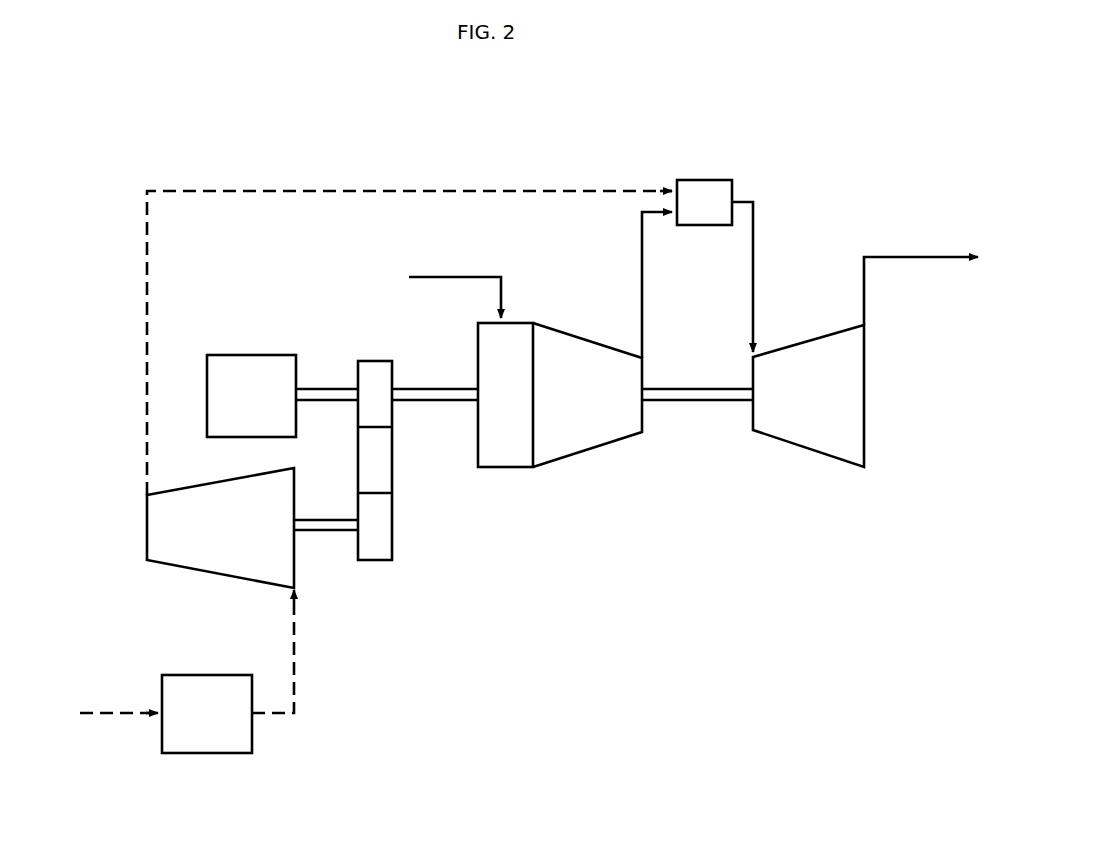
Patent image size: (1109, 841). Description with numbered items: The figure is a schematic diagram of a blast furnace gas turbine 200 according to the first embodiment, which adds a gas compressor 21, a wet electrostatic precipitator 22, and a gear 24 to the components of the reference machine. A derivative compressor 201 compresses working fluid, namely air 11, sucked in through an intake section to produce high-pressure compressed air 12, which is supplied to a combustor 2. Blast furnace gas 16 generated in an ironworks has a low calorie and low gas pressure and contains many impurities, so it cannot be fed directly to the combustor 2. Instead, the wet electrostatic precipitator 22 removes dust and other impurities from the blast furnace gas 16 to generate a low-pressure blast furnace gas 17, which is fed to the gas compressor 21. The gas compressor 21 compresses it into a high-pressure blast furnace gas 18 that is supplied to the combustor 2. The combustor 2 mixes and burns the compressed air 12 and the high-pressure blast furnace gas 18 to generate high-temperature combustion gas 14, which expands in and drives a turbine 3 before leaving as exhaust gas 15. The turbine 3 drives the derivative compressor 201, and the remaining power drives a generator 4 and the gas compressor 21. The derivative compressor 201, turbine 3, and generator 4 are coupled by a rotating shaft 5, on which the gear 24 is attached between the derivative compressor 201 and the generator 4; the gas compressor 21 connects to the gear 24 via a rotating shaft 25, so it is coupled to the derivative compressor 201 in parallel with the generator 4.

The blast furnace gas turbine 200 is at (302, 146).
The high-pressure blast furnace gas 18 is at (146, 328).
The generator 4 is at (258, 355).
The gear 24 is at (370, 362).
The rotating shaft 25 is at (312, 532).
The gas compressor 21 is at (210, 575).
The derivative compressor 201 is at (585, 452).
The working fluid (air) 11 is at (460, 276).
The compressed air 12 is at (642, 300).
The combustor 2 is at (700, 180).
The combustion gas 14 is at (754, 295).
The rotating shaft 5 is at (685, 402).
The turbine 3 is at (810, 450).
The exhaust gas 15 is at (933, 256).
The wet electrostatic precipitator 22 is at (252, 736).
The blast furnace gas 16 is at (140, 710).
The low-pressure blast furnace gas 17 is at (300, 685).